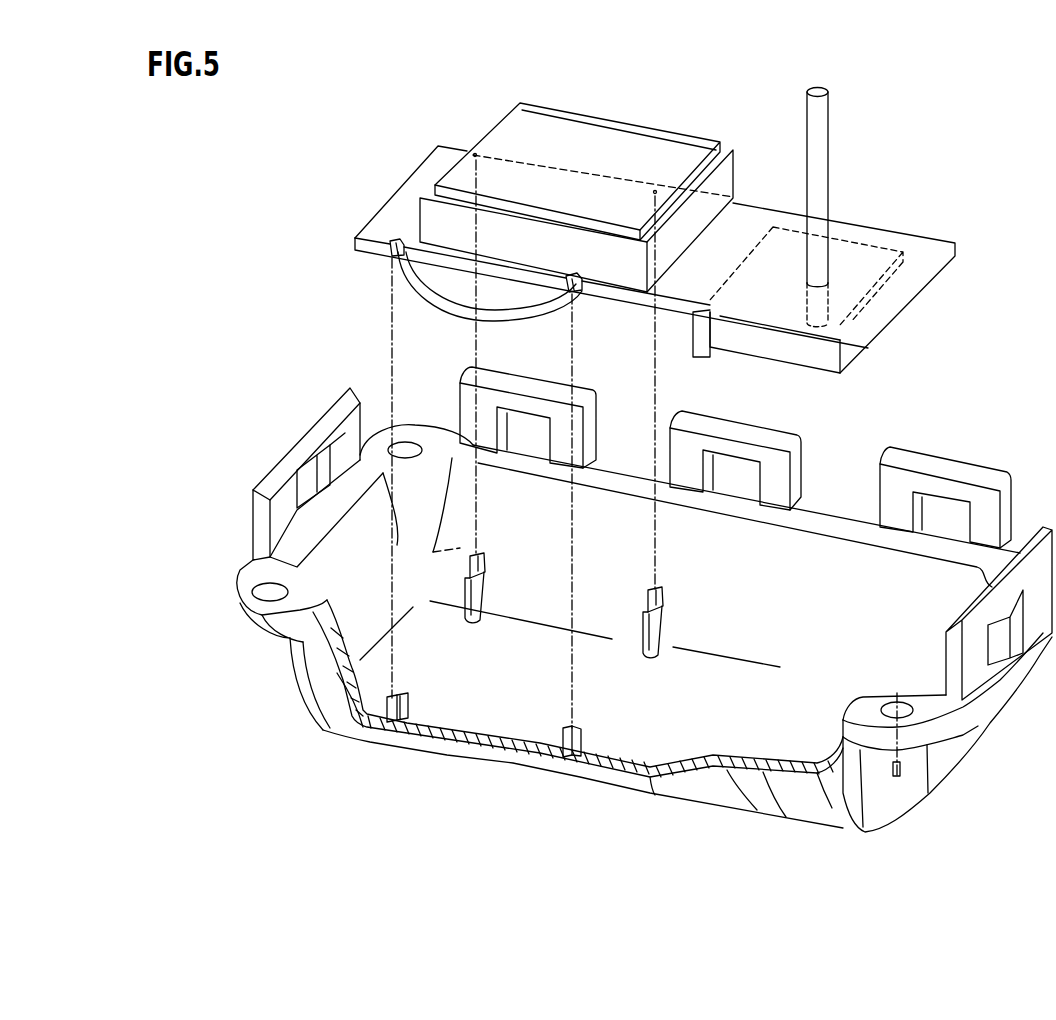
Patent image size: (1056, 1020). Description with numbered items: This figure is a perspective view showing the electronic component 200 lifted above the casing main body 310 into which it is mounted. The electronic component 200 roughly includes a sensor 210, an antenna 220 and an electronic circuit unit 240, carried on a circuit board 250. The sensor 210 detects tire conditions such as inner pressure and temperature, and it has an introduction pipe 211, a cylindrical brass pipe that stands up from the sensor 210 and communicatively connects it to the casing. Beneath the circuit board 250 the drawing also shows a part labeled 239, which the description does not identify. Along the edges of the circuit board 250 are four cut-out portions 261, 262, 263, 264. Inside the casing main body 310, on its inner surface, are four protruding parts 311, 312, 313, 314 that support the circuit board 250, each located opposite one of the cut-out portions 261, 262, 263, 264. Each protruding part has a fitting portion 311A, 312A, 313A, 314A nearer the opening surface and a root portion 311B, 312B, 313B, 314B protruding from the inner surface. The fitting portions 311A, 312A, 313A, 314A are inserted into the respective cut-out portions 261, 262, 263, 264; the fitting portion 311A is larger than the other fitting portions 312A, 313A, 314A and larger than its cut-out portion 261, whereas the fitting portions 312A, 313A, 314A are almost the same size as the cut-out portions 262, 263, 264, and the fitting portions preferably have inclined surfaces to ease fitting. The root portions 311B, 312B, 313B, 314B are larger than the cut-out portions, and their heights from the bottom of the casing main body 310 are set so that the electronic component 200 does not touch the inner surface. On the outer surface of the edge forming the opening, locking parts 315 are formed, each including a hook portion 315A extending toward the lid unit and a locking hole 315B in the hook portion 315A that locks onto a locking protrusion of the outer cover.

The electronic component 200 is at (942, 200).
The sensor 210 is at (802, 363).
The introduction pipe 211 is at (830, 112).
The antenna 220 is at (682, 355).
The lens 239 is at (440, 295).
The electronic circuit unit 240 is at (590, 128).
The circuit board 250 is at (437, 153).
The cut-out portion 261 is at (656, 190).
The cut-out portion 262 is at (572, 276).
The cut-out portion 263 is at (390, 240).
The cut-out portion 264 is at (473, 152).
The casing main body 310 is at (648, 822).
The protruding part 311 is at (783, 638).
The fitting portion 311A is at (660, 592).
The root portion 311B is at (663, 628).
The protruding part 312 is at (700, 751).
The fitting portion 312A is at (575, 728).
The root portion 312B is at (585, 745).
The protruding part 313 is at (480, 798).
The fitting portion 313A is at (387, 718).
The root portion 313B is at (408, 700).
The protruding part 314 is at (553, 676).
The fitting portion 314A is at (466, 598).
The root portion 314B is at (487, 563).
The locking part 315 is at (303, 315).
The hook portion 315A is at (300, 482).
The locking hole 315B is at (343, 433).